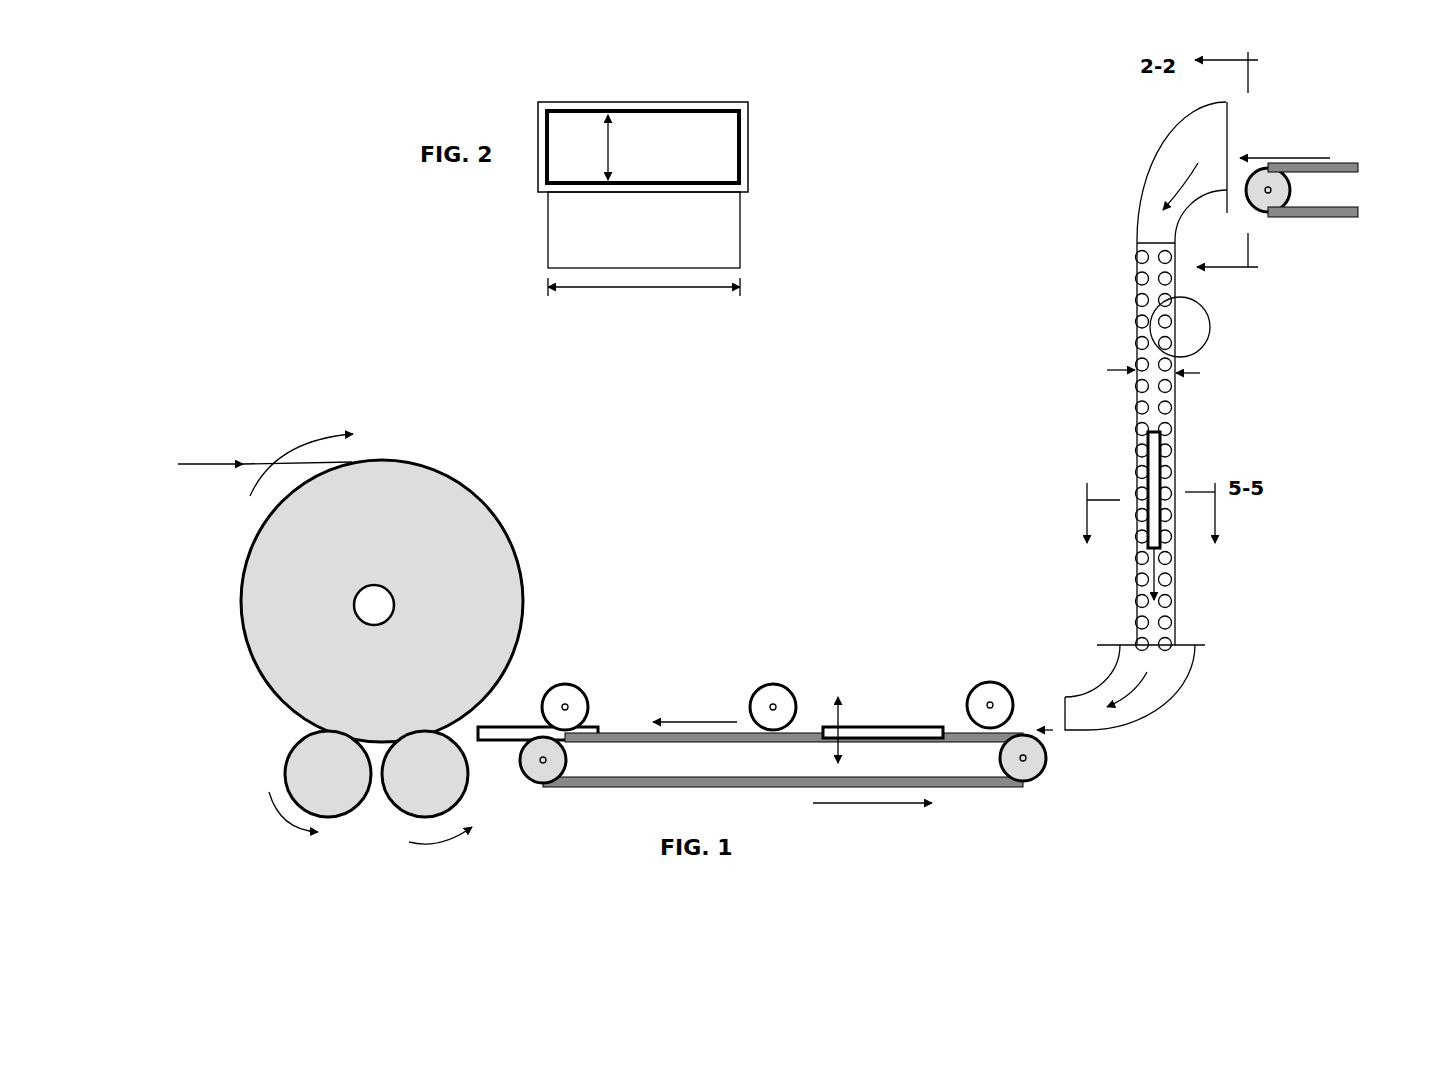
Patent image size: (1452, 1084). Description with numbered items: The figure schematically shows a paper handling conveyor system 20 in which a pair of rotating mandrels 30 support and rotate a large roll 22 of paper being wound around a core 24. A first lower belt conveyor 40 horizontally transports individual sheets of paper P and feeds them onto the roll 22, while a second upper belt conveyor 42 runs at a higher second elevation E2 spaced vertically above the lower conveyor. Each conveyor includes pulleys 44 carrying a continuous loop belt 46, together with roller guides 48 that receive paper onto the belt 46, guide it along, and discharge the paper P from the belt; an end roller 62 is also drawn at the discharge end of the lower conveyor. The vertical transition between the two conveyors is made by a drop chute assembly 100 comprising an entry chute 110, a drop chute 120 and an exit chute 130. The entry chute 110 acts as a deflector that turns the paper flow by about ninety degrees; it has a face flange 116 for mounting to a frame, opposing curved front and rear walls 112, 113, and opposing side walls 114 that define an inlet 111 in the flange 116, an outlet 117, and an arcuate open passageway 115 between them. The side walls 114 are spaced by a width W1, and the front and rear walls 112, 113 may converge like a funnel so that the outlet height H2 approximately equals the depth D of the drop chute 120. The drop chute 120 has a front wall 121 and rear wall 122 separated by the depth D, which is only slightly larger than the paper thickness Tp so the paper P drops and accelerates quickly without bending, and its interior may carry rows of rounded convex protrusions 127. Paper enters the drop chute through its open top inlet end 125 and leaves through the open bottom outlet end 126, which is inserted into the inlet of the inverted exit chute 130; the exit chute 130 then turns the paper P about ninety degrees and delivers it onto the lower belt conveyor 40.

In FIG. 1, the paper handling conveyor system 20 is at (254, 391).
In FIG. 1, the large roll 22 is at (481, 498).
In FIG. 1, the core 24 is at (355, 593).
In FIG. 1, the rotating mandrels 30 is at (285, 770).
In FIG. 1, the first lower belt conveyor 40 is at (635, 727).
In FIG. 1, the second upper belt conveyor 42 is at (1305, 220).
In FIG. 1, the pulleys 44 is at (530, 780).
In FIG. 1, the continuous loop belt 46 is at (622, 790).
In FIG. 1, the roller guides 48 is at (565, 685).
In FIG. 1, the end roller 62 is at (1053, 758).
In FIG. 1, the drop chute assembly 100 is at (1218, 363).
In FIG. 1, the entry chute 110 is at (1147, 180).
In FIG. 2, the entry chute 110 is at (512, 80).
In FIG. 1, the inlet 111 is at (1240, 137).
In FIG. 2, the inlet 111 is at (645, 108).
In FIG. 1, the front wall 112 is at (1165, 143).
In FIG. 2, the front wall 112 is at (688, 105).
In FIG. 1, the rear wall 113 is at (1185, 208).
In FIG. 2, the rear wall 113 is at (624, 256).
In FIG. 1, the side walls 114 is at (1178, 140).
In FIG. 2, the side walls 114 is at (748, 120).
In FIG. 2, the open passageway 115 is at (577, 122).
In FIG. 1, the face flange 116 is at (1233, 110).
In FIG. 2, the face flange 116 is at (745, 195).
In FIG. 1, the outlet 117 is at (1055, 707).
In FIG. 2, the outlet 117 is at (625, 268).
In FIG. 1, the drop chute 120 is at (1130, 277).
In FIG. 1, the front wall 121 is at (1135, 395).
In FIG. 1, the rear wall 122 is at (1172, 418).
In FIG. 1, the open top inlet end 125 is at (1137, 243).
In FIG. 1, the open bottom outlet end 126 is at (1127, 635).
In FIG. 1, the convex protrusions 127 is at (1137, 363).
In FIG. 1, the exit chute 130 is at (1150, 712).
In FIG. 1, the paper P is at (885, 727).
In FIG. 1, the depth D is at (1154, 384).
In FIG. 1, the height H2 is at (1160, 232).
In FIG. 2, the height H2 is at (612, 158).
In FIG. 2, the width W1 is at (644, 287).
In FIG. 1, the thickness Tp is at (826, 716).
In FIG. 1, the second elevation E2 is at (1315, 187).